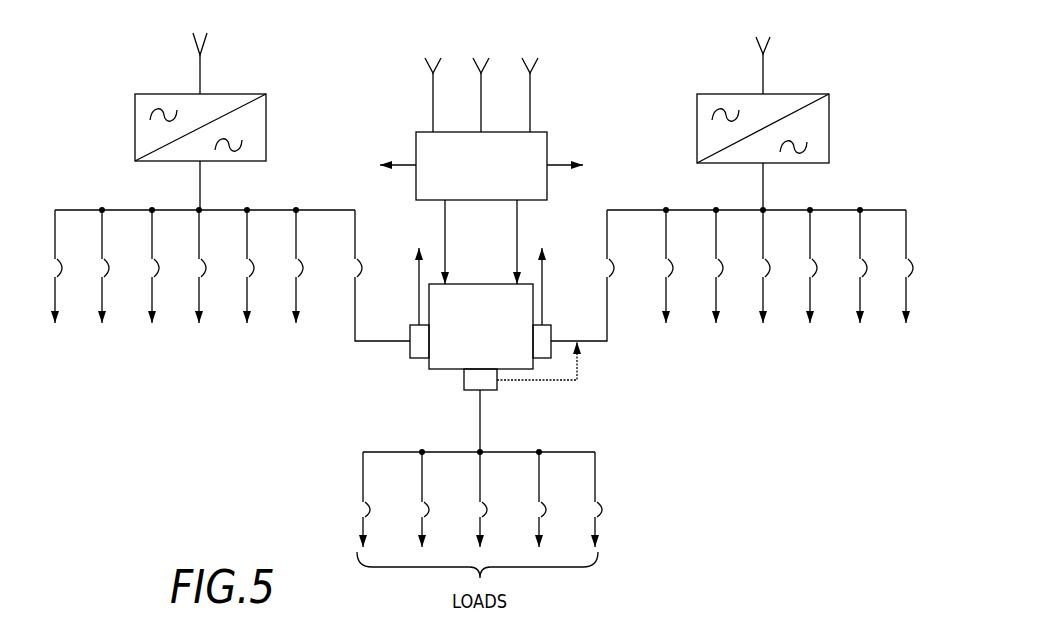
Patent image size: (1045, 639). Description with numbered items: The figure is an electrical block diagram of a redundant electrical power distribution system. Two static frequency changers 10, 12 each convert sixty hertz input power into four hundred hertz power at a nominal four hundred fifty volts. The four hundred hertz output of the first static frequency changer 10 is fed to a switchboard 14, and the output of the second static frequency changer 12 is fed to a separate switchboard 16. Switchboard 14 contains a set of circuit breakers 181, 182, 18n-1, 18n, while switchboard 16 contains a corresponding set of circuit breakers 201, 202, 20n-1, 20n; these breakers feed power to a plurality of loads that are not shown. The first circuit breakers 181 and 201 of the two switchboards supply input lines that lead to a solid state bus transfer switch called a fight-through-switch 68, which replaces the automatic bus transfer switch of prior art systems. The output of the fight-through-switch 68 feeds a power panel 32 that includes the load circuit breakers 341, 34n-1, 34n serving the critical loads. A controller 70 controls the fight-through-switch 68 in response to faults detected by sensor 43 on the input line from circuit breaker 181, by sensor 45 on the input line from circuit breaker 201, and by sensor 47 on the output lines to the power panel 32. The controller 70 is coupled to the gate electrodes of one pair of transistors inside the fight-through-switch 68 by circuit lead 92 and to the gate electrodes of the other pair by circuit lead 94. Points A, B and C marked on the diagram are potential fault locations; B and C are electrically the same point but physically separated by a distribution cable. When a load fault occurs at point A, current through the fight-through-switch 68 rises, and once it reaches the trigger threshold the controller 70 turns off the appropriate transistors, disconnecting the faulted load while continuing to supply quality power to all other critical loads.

The static frequency changer 10 is at (266, 118).
The static frequency changer 12 is at (829, 118).
The switchboard 14 is at (320, 210).
The switchboard 16 is at (632, 210).
The circuit breaker 18n is at (58, 262).
The circuit breaker 18n-1 is at (100, 277).
The circuit breaker 182 is at (298, 262).
The circuit breaker 181 is at (357, 262).
The circuit breaker 201 is at (609, 262).
The circuit breaker 202 is at (668, 262).
The circuit breaker 20n-1 is at (858, 277).
The circuit breaker 20n is at (908, 262).
The power panel 32 is at (565, 452).
The load circuit breaker 341 is at (366, 505).
The load circuit breaker 34n-1 is at (541, 505).
The load circuit breaker 34n is at (597, 505).
The sensor 43 is at (389, 372).
The sensor 45 is at (550, 330).
The sensor 47 is at (500, 410).
The fight-through-switch 68 is at (445, 370).
The controller 70 is at (423, 132).
The circuit lead 92 is at (447, 236).
The circuit lead 94 is at (519, 228).